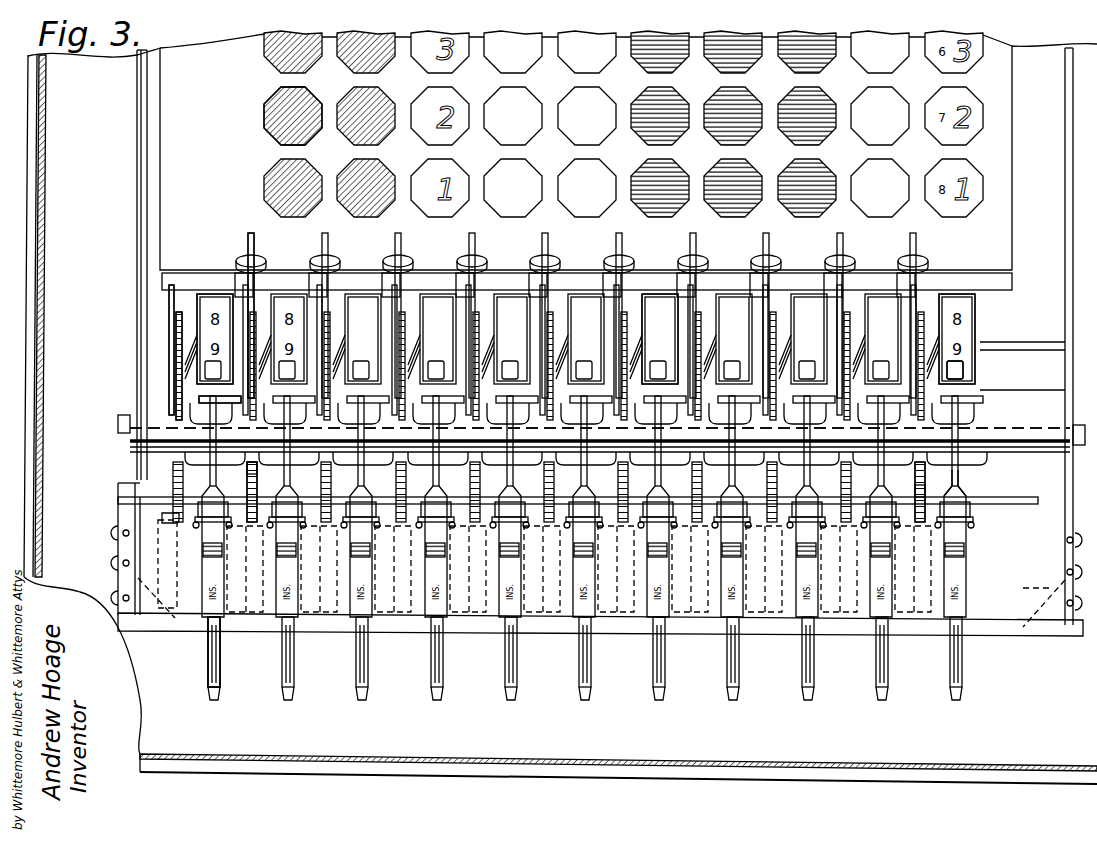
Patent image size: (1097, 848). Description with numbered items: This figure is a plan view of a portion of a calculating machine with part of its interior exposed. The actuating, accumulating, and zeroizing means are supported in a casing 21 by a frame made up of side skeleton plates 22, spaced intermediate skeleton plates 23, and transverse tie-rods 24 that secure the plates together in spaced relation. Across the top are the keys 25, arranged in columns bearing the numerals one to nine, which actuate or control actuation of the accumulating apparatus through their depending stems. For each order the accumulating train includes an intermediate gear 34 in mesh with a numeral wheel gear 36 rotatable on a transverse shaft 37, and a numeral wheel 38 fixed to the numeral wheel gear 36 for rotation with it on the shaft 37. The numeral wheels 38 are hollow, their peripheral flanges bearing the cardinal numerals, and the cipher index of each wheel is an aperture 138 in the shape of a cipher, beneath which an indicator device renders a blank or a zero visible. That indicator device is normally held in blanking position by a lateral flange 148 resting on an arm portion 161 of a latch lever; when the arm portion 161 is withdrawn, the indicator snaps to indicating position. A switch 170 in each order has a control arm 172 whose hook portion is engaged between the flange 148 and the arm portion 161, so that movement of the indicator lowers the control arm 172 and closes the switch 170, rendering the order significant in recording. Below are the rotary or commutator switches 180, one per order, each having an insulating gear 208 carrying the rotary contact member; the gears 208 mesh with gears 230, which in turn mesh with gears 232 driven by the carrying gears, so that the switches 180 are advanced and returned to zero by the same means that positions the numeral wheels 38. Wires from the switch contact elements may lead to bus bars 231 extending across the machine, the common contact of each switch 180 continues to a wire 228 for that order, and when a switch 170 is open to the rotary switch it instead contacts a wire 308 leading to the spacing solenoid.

The casing 21 is at (128, 215).
The side skeleton plates 22 is at (146, 245).
The intermediate skeleton plates 23 is at (166, 279).
The transverse tie-rods 24 is at (121, 421).
The keys 25 is at (265, 108).
The intermediate gear 34 is at (176, 362).
The numeral wheel gear 36 is at (176, 320).
The transverse shaft 37 is at (252, 325).
The numeral wheel 38 is at (197, 300).
The aperture 138 is at (960, 372).
The lateral flange 148 is at (199, 396).
The arm portion 161 is at (195, 430).
The switch 170 is at (972, 501).
The control arm 172 is at (968, 474).
The rotary switch 180 is at (474, 630).
The gear 208 is at (257, 604).
The wire 228 is at (189, 652).
The gear 230 is at (256, 493).
The bus bar 231 is at (924, 492).
The gear 232 is at (252, 478).
The wire 308 is at (205, 668).